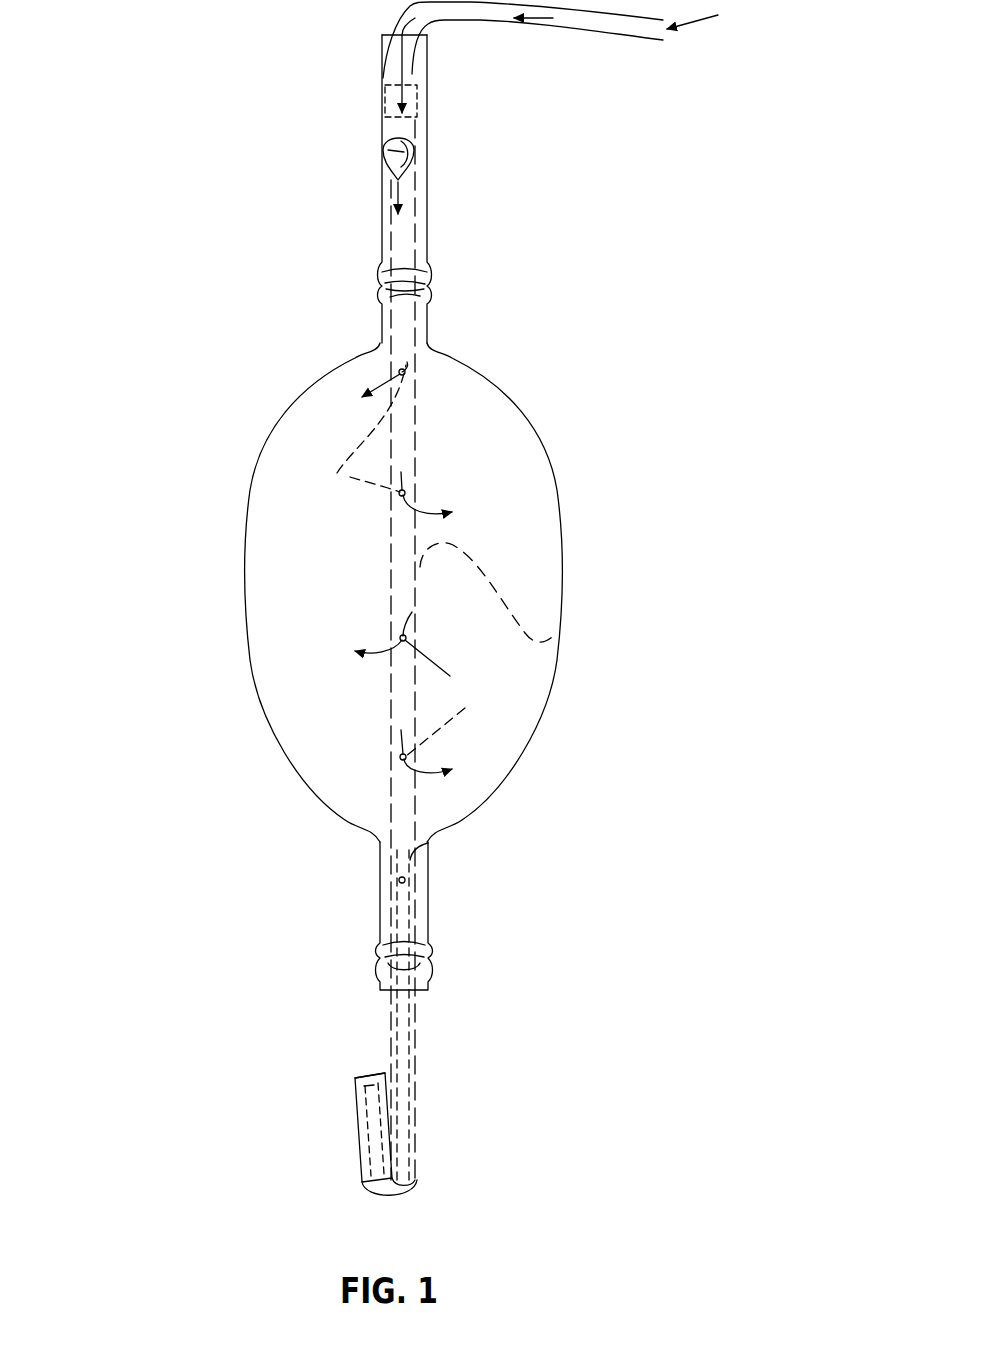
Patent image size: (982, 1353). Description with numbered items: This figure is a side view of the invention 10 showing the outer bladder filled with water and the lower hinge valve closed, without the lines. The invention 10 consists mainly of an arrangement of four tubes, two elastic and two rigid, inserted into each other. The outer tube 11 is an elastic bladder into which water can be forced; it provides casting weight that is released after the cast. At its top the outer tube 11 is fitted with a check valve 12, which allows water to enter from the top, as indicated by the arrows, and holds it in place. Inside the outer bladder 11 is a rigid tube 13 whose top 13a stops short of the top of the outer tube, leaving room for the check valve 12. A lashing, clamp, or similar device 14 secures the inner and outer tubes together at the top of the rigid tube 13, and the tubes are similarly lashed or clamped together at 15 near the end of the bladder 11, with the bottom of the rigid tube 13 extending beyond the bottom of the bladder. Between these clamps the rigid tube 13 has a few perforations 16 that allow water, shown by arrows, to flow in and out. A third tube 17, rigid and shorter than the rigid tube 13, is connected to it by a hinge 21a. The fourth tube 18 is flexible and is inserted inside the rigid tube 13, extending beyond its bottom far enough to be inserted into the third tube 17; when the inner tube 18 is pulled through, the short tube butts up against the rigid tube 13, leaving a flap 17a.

The invention 10 is at (395, 622).
The outer tube 11 is at (261, 685).
The check valve 12 is at (382, 148).
The rigid tube 13 is at (557, 633).
The top of rigid tube 13a is at (435, 195).
The lashing, clamp, or similar device 14 is at (429, 284).
The lashing or clamp 15 is at (428, 957).
The perforations 16 is at (391, 567).
The third tube 17 is at (360, 1128).
The flap 17a is at (362, 1080).
The fourth tube 18 is at (428, 843).
The hinge 21a is at (417, 1182).